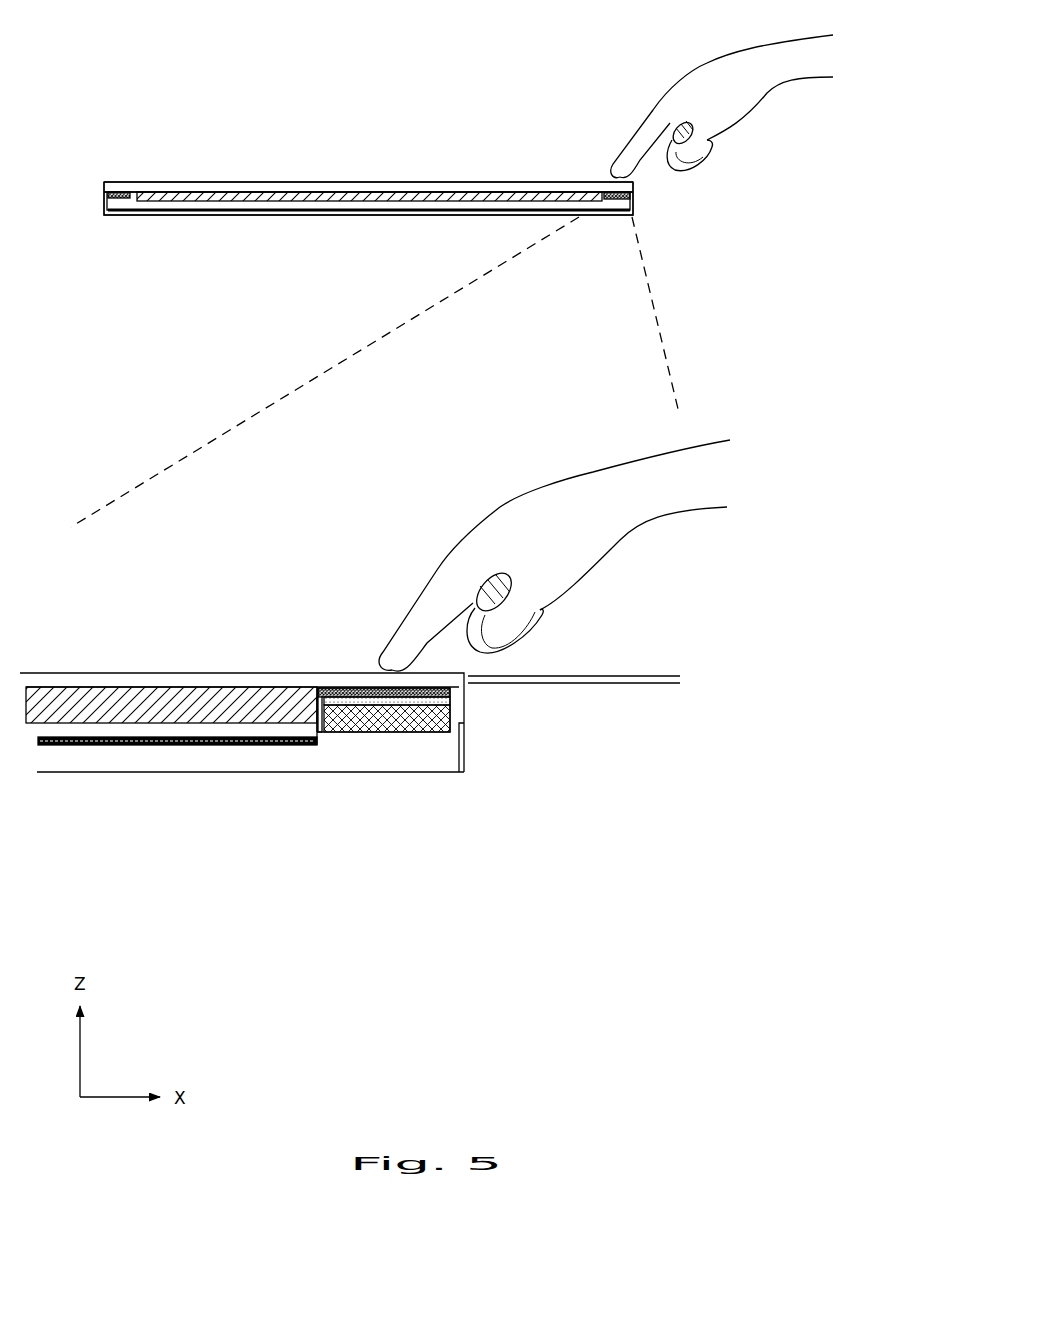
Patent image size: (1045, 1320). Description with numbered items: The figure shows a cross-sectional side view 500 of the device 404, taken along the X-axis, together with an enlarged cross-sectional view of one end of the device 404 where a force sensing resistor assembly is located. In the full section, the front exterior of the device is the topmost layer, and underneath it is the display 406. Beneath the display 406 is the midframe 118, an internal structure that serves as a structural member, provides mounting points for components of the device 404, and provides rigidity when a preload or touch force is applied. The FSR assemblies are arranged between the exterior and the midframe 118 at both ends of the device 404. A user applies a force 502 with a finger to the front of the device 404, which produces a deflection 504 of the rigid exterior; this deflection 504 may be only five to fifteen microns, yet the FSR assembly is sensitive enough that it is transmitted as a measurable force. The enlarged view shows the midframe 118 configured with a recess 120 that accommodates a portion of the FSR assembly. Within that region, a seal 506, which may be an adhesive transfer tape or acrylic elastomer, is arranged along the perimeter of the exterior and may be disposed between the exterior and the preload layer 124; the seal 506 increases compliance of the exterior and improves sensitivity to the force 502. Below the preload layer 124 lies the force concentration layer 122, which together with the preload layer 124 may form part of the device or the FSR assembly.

The cross-sectional side view 500 is at (164, 42).
The device 404 is at (216, 162).
The display 406 is at (528, 193).
The midframe 118 is at (498, 208).
The applied force 502 is at (617, 138).
The deflection 504 is at (672, 737).
The seal 506 is at (448, 692).
The preload layer 124 is at (450, 698).
The force concentration layer 122 is at (450, 706).
The recess 120 is at (315, 710).